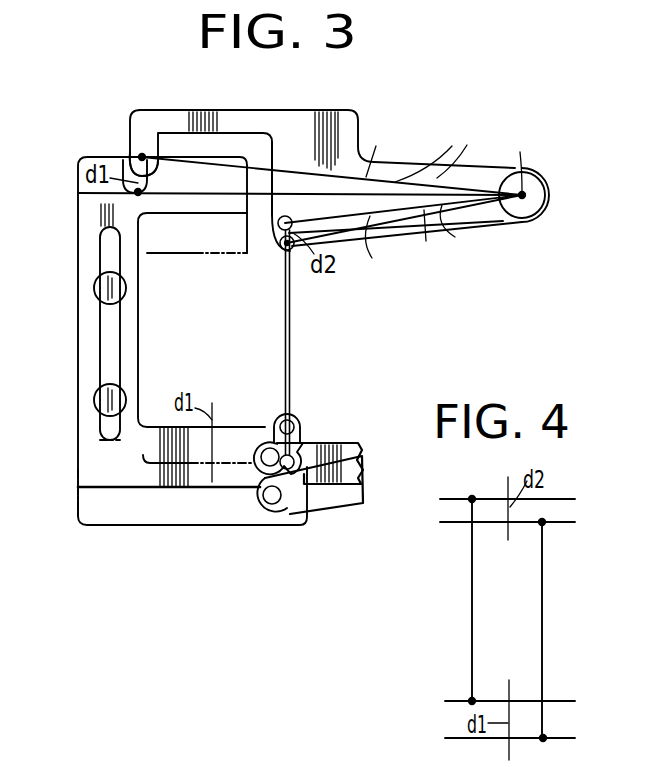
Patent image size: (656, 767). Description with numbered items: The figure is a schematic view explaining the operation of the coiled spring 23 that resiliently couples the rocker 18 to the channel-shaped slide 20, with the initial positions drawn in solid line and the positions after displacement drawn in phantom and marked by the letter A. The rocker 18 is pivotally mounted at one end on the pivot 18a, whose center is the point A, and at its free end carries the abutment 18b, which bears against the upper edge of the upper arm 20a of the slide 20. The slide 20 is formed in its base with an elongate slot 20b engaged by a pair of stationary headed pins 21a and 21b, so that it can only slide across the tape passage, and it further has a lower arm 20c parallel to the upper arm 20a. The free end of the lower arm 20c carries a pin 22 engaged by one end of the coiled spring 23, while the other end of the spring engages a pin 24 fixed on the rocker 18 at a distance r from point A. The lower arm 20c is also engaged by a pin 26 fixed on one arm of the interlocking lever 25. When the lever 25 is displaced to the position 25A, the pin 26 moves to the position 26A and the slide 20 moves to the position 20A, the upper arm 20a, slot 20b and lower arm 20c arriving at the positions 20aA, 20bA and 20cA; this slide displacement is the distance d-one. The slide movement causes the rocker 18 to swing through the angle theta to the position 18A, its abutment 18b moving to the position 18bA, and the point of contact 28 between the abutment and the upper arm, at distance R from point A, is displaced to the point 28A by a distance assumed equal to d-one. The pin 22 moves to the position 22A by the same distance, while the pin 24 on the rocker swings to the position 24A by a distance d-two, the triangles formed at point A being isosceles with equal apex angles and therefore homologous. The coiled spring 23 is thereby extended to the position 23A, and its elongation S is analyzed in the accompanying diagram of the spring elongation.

In FIG. 3, the rocker 18 is at (345, 113).
In FIG. 3, the pivot 18a is at (548, 197).
In FIG. 3, the abutment 18b is at (143, 130).
In FIG. 3, the displaced position of rocker 18A is at (312, 128).
In FIG. 3, the displaced position of abutment 18bA is at (123, 165).
In FIG. 3, the channel-shaped slide 20 is at (80, 320).
In FIG. 3, the upper arm 20a is at (175, 206).
In FIG. 3, the displaced position of upper arm 20aA is at (211, 249).
In FIG. 3, the elongate slot 20b is at (110, 331).
In FIG. 3, the displaced position of elongate slot 20bA is at (108, 430).
In FIG. 3, the lower arm 20c is at (157, 480).
In FIG. 3, the displaced position of lower arm 20cA is at (205, 521).
In FIG. 3, the displaced position of slide 20A is at (80, 492).
In FIG. 3, the stationary headed pin 21a is at (96, 288).
In FIG. 3, the stationary headed pin 21b is at (100, 392).
In FIG. 3, the pin 22 is at (300, 415).
In FIG. 4, the pin 22 is at (471, 698).
In FIG. 3, the displaced position of pin 22A is at (297, 458).
In FIG. 4, the displaced position of pin 22A is at (545, 736).
In FIG. 3, the coiled spring 23 is at (285, 315).
In FIG. 4, the coiled spring 23 is at (470, 598).
In FIG. 3, the extended position of coiled spring 23A is at (291, 318).
In FIG. 4, the extended position of coiled spring 23A is at (545, 594).
In FIG. 3, the pin 24 is at (280, 232).
In FIG. 4, the pin 24 is at (472, 497).
In FIG. 3, the displaced position of pin 24A is at (293, 257).
In FIG. 4, the displaced position of pin 24A is at (543, 525).
In FIG. 3, the interlocking lever 25 is at (360, 443).
In FIG. 3, the displaced position of interlocking lever 25A is at (343, 498).
In FIG. 3, the pin 26 is at (268, 441).
In FIG. 3, the displaced position of pin 26A is at (278, 502).
In FIG. 3, the point of contact 28 is at (142, 154).
In FIG. 3, the displaced point of contact 28A is at (136, 193).